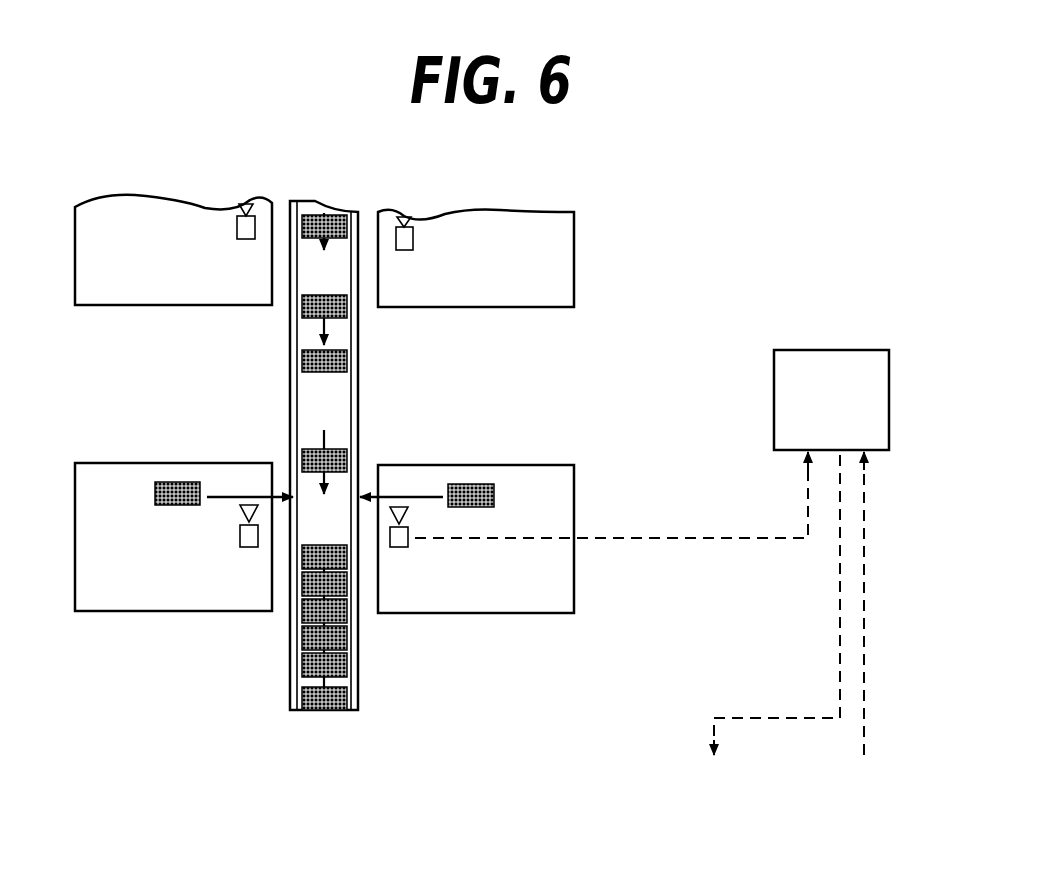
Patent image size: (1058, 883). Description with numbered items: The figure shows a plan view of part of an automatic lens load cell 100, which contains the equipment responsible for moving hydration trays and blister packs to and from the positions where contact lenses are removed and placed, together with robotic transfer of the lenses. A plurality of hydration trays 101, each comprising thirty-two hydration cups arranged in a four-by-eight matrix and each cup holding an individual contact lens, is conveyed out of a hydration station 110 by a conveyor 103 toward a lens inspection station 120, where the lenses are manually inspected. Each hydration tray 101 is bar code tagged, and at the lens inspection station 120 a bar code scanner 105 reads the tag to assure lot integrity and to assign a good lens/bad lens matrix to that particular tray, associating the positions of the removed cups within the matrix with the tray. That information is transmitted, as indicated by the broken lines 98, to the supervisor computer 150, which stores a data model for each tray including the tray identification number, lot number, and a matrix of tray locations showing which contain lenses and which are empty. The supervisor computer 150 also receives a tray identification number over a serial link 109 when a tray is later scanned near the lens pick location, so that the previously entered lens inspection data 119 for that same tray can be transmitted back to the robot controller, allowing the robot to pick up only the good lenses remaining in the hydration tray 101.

The automatic lens load cell 100 is at (816, 261).
The broken lines 98 is at (740, 538).
The hydration tray 101 is at (350, 455).
The conveyor 103 is at (360, 387).
The bar code scanner 105 is at (412, 553).
The serial link 109 is at (864, 585).
The hydration station 110 is at (580, 268).
The lens inspection data 119 is at (840, 672).
The lens inspection station 120 is at (536, 461).
The supervisor computer 150 is at (771, 385).